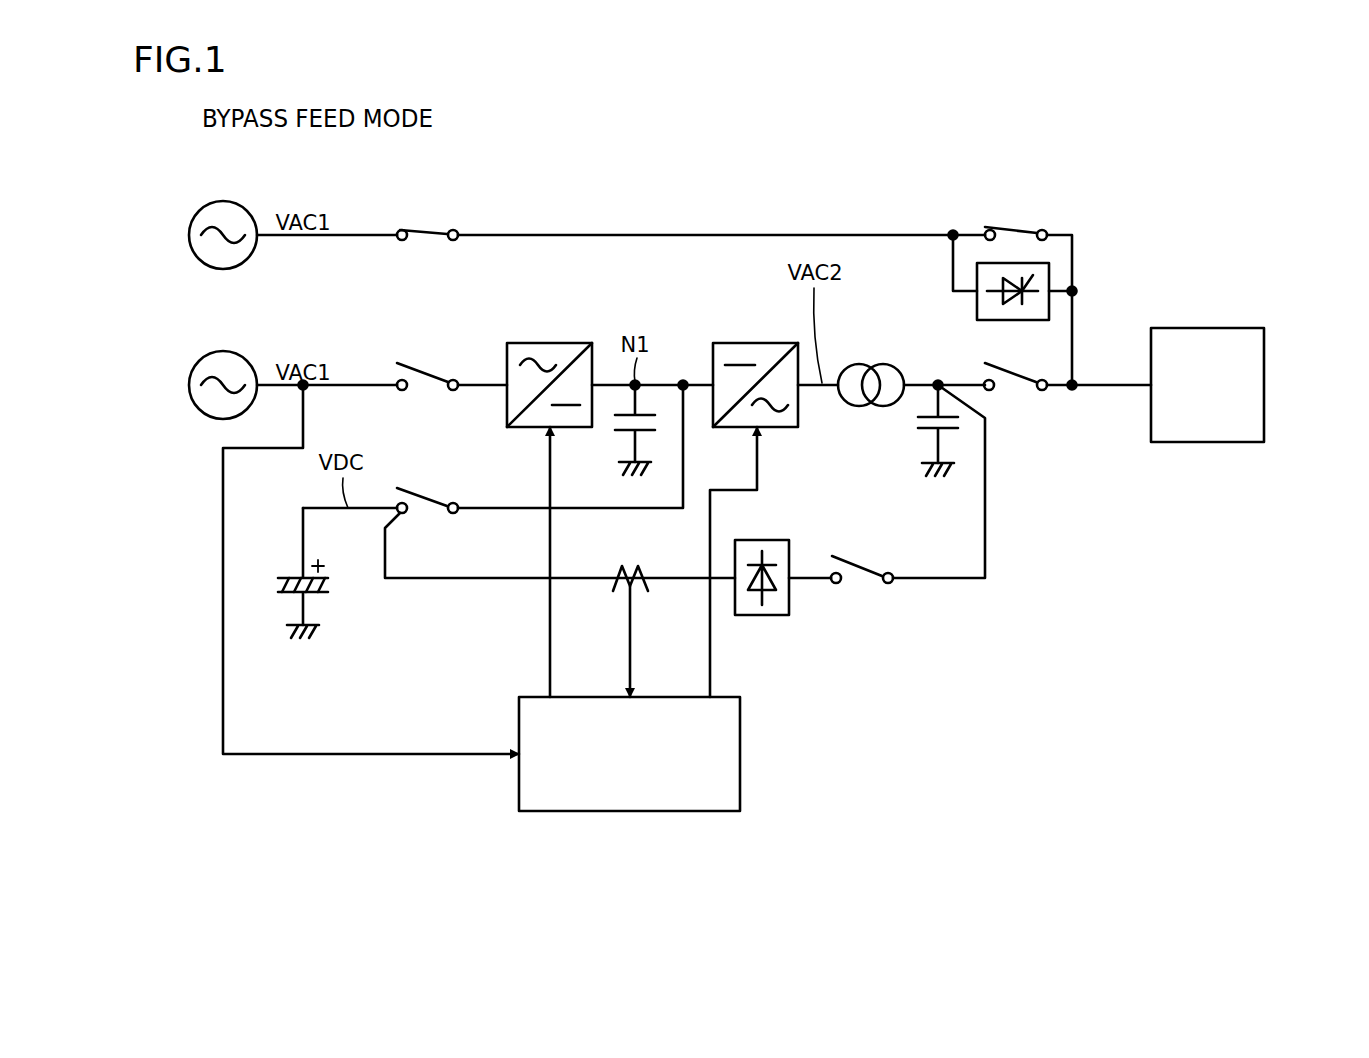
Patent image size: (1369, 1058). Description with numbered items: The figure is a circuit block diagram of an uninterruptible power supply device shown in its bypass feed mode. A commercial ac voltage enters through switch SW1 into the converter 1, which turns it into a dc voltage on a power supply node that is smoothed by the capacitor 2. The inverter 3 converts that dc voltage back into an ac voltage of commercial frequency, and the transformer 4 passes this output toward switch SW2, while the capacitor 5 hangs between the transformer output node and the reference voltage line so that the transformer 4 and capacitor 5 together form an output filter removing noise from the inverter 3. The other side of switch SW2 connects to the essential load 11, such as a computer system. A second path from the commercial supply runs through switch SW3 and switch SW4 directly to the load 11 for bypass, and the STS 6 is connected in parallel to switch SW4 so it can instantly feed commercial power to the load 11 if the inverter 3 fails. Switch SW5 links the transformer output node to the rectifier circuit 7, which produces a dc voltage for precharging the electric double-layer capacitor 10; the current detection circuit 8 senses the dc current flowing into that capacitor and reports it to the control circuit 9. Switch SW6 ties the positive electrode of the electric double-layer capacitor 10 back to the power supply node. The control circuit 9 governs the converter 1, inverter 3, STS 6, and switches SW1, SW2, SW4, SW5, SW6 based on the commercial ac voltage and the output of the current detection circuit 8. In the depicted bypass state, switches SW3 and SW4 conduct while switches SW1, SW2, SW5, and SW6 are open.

The converter 1 is at (548, 343).
The capacitor 2 is at (627, 432).
The inverter 3 is at (757, 343).
The transformer 4 is at (858, 363).
The capacitor 5 is at (928, 430).
The STS 6 is at (977, 310).
The rectifier circuit 7 is at (777, 615).
The current detection circuit 8 is at (621, 566).
The control circuit 9 is at (624, 811).
The electric double-layer capacitor 10 is at (290, 578).
The load 11 is at (1207, 328).
The switch SW1 is at (430, 373).
The switch SW2 is at (1013, 382).
The switch SW3 is at (430, 228).
The switch SW4 is at (1013, 230).
The switch SW5 is at (860, 570).
The switch SW6 is at (430, 495).